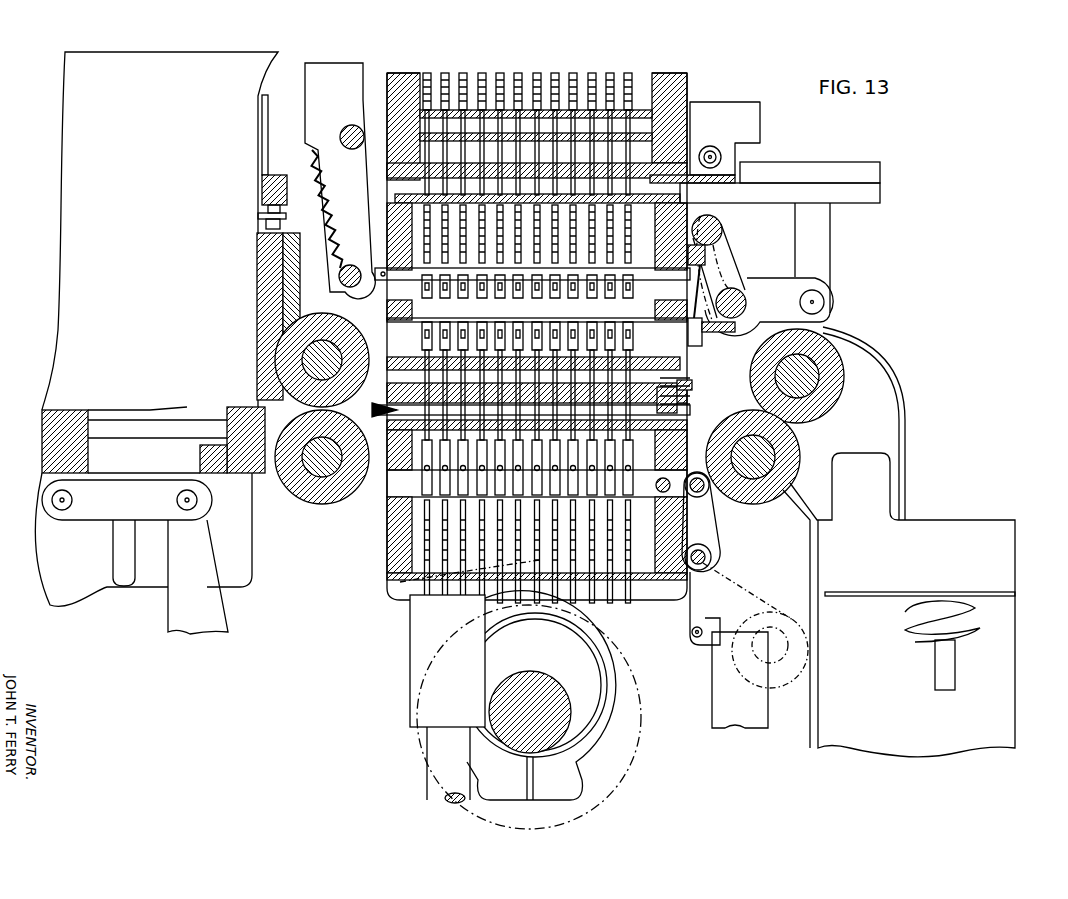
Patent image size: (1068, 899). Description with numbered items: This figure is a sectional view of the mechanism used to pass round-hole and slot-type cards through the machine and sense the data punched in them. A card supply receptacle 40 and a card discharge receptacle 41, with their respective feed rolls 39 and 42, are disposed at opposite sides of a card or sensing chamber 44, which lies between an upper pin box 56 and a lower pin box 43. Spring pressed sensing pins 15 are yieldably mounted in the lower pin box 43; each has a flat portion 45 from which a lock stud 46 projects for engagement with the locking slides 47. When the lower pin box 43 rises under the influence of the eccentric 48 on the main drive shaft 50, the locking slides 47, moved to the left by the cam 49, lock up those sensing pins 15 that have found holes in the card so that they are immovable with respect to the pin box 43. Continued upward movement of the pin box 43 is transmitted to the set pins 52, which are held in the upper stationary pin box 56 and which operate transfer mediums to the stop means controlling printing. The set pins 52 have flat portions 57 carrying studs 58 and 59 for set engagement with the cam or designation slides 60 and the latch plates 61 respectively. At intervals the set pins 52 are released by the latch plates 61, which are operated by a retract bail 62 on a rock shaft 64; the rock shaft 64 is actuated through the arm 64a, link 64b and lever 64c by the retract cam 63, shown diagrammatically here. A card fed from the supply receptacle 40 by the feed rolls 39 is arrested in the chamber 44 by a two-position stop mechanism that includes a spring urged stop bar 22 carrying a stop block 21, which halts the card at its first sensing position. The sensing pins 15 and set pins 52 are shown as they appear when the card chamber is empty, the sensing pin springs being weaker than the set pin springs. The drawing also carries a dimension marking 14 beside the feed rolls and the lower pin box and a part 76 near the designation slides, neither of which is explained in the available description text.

The pin 14 is at (258, 418).
The sensing pins 15 is at (706, 549).
The stop block 21 is at (688, 382).
The stop bar 22 is at (688, 400).
The feed rolls 39 is at (322, 504).
The card supply receptacle 40 is at (142, 359).
The card discharge receptacle 41 is at (959, 572).
The feed rolls 42 is at (841, 398).
The lower pin box 43 is at (390, 541).
The card or sensing chamber 44 is at (394, 406).
The flat portions 45 is at (700, 514).
The lock studs 46 is at (690, 476).
The locking slides 47 is at (390, 512).
The eccentric 48 is at (557, 666).
The cam 49 is at (750, 717).
The main drive shaft 50 is at (528, 680).
The set pins 52 is at (690, 160).
The upper pin box 56 is at (723, 222).
The flat portions 57 is at (537, 240).
The stud 58 is at (700, 265).
The stud 59 is at (726, 303).
The cam or designation slides 60 is at (392, 298).
The latch plates 61 is at (695, 346).
The retract bail 62 is at (724, 334).
The retract cam 63 is at (638, 760).
The rock shaft 64 is at (722, 236).
The arm 64a is at (735, 262).
The link 64b is at (398, 575).
The lever 64c is at (755, 621).
The hooks 76 is at (402, 333).